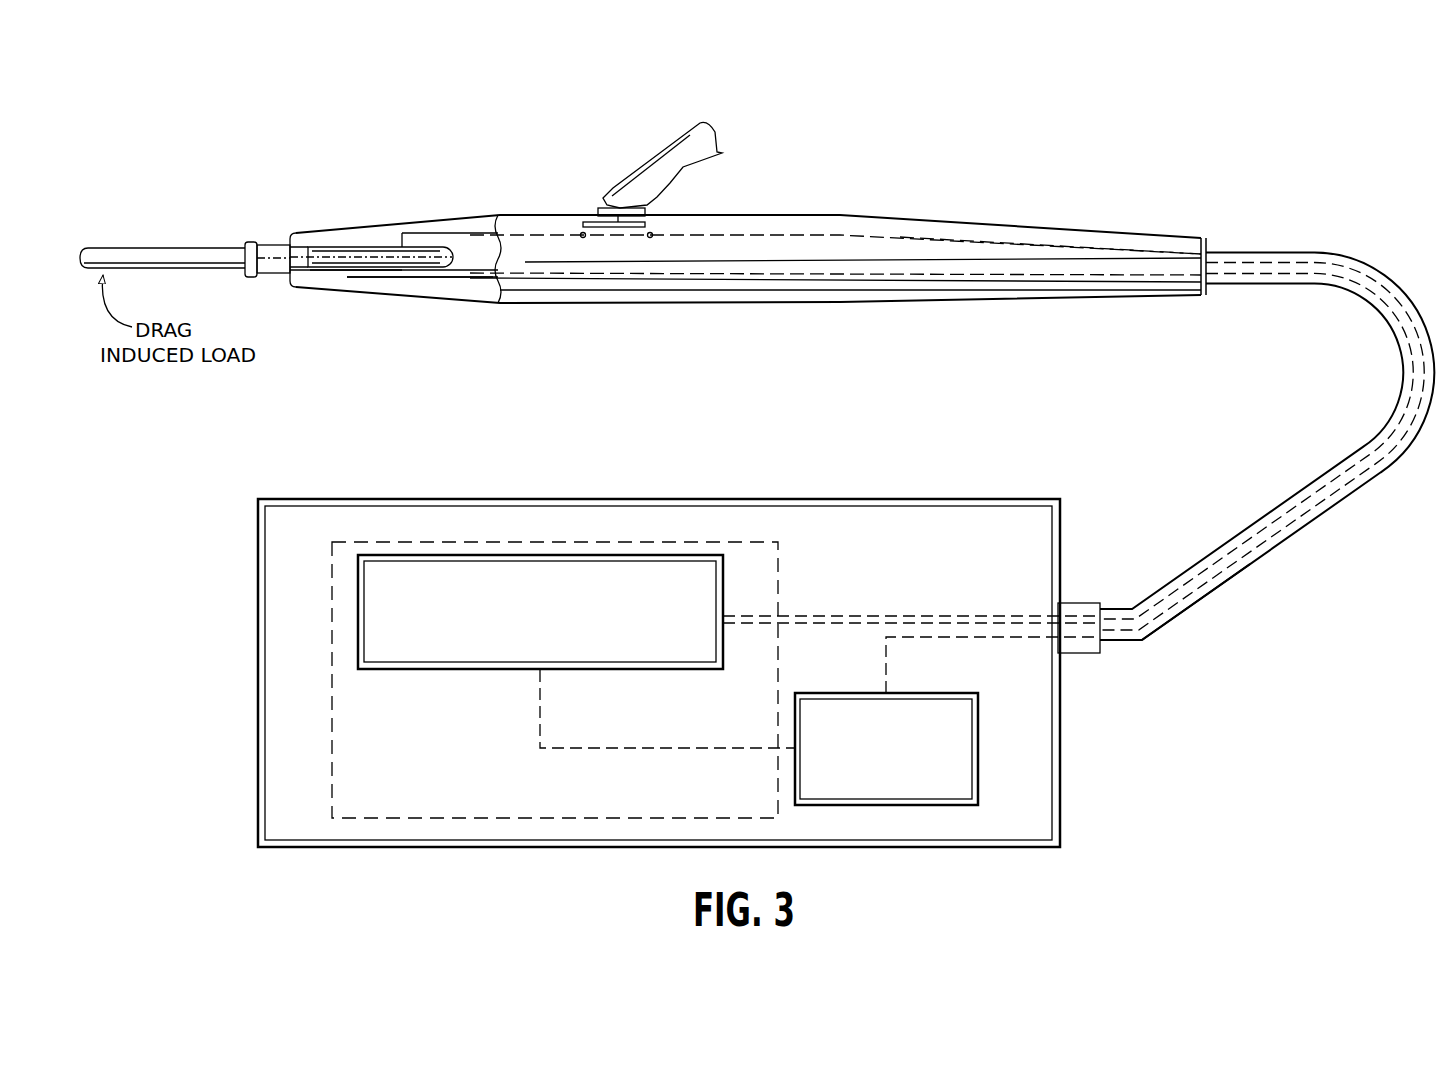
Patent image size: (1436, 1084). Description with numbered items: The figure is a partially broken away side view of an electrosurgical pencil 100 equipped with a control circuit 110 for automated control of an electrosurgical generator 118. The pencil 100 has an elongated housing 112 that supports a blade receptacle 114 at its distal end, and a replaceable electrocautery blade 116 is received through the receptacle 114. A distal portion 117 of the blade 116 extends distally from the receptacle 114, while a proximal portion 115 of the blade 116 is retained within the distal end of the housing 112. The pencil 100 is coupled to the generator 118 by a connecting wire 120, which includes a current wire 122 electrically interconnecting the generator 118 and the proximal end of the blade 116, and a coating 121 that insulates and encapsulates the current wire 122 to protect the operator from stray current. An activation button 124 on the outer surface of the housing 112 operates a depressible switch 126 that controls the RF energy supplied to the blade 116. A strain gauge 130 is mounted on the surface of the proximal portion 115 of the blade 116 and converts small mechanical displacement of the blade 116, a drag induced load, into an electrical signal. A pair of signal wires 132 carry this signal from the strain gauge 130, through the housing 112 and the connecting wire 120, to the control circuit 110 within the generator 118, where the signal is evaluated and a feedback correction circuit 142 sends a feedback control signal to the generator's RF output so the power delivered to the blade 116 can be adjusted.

The electrosurgical pencil 100 is at (818, 150).
The control circuit 110 is at (392, 540).
The elongated housing 112 is at (937, 216).
The blade receptacle 114 is at (263, 252).
The proximal portion of blade 115 is at (399, 245).
The electrocautery blade 116 is at (153, 243).
The distal portion of blade 117 is at (96, 248).
The electrosurgical generator 118 is at (963, 498).
The connecting wire 120 is at (1255, 248).
The coating 121 is at (1196, 605).
The current wire 122 is at (1122, 252).
The activation button 124 is at (592, 200).
The depressible switch 126 is at (648, 225).
The strain gauge 130 is at (335, 281).
The signal wires 132 is at (397, 281).
The feedback correction circuit 142 is at (487, 567).